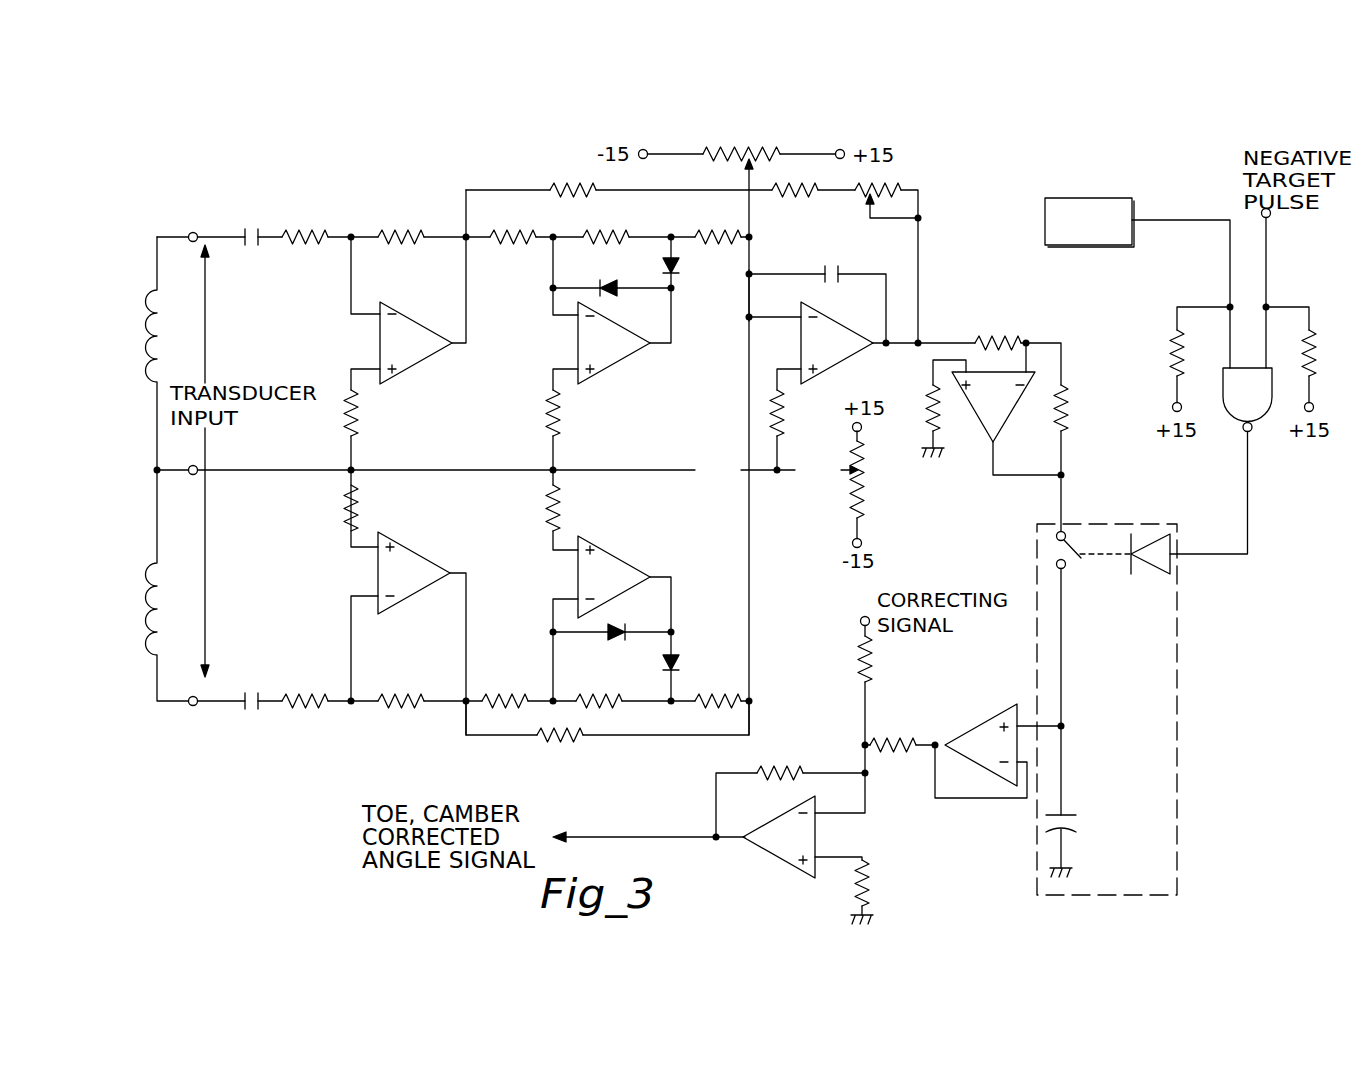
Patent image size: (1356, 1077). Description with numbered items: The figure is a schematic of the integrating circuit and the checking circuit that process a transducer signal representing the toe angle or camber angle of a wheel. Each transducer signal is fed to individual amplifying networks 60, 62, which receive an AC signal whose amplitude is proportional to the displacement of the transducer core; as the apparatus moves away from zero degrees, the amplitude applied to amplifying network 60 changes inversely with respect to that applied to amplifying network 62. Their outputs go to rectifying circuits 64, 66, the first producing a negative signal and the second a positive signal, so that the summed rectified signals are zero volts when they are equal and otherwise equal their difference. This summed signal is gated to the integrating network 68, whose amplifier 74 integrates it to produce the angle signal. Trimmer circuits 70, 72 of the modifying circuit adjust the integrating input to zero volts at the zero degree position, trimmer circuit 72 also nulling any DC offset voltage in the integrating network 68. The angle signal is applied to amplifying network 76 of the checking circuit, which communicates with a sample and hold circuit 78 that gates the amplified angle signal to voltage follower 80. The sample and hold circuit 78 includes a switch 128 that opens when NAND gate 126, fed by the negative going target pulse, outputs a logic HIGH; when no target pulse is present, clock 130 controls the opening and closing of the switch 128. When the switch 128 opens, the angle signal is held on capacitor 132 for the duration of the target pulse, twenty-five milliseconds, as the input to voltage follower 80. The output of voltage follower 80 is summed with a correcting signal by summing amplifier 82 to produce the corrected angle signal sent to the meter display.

The amplifying network 60 is at (325, 290).
The amplifying network 62 is at (356, 572).
The rectifying circuit 64 is at (541, 267).
The rectifying circuit 66 is at (572, 574).
The integrating network 68 is at (768, 329).
The trimmer circuit 70 is at (890, 178).
The trimmer circuit 72 is at (840, 491).
The operational amplifier (integrator) 74 is at (826, 321).
The amplifying network 76 is at (1030, 362).
The sample and hold circuit 78 is at (1152, 524).
The voltage follower 80 is at (991, 718).
The summing amplifier 82 is at (764, 850).
The NAND gate 126 is at (1244, 429).
The switch 128 is at (1074, 560).
The clock 130 is at (1085, 246).
The capacitor 132 is at (1065, 814).